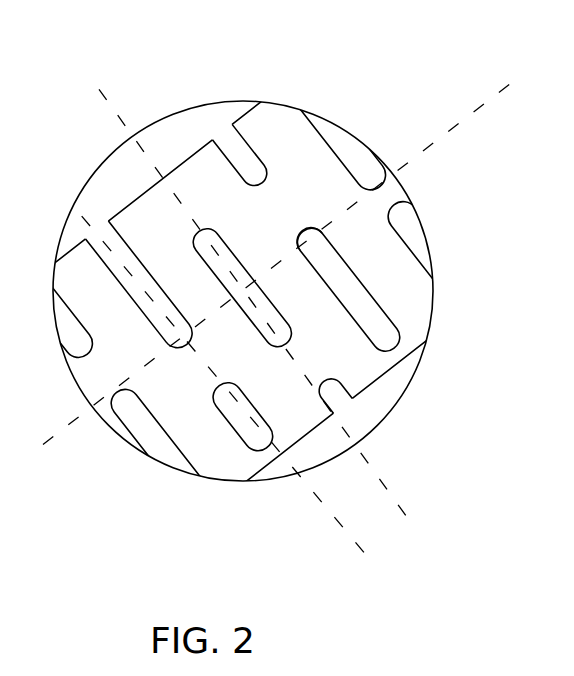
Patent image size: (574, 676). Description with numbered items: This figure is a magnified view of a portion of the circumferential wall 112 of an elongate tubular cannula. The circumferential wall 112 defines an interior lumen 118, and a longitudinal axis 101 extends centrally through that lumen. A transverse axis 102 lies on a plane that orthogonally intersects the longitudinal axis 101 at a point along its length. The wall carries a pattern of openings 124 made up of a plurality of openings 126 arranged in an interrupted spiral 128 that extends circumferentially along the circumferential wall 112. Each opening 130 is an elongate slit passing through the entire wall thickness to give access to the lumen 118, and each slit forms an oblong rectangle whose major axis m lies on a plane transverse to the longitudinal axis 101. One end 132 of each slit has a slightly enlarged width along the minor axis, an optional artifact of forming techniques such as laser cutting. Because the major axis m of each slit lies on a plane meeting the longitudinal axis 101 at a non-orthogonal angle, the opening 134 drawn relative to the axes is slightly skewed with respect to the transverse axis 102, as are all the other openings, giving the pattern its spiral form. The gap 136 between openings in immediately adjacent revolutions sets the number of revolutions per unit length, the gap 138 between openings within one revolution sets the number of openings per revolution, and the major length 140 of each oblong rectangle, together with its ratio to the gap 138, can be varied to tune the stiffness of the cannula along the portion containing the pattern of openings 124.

The longitudinal axis 101 is at (495, 109).
The transverse axis 102 is at (431, 547).
The circumferential wall 112 is at (333, 393).
The interior lumen 118 is at (241, 157).
The pattern of openings 124 is at (172, 130).
The plurality of openings 126 is at (158, 182).
The interrupted spiral 128 is at (336, 411).
The opening 130 is at (345, 212).
The end of the slit 132 is at (382, 260).
The opening 134 is at (242, 287).
The gap between openings in adjacent revolutions 136 is at (59, 319).
The gap between openings 138 is at (158, 445).
The major length 140 is at (182, 338).
The major axis m is at (70, 202).